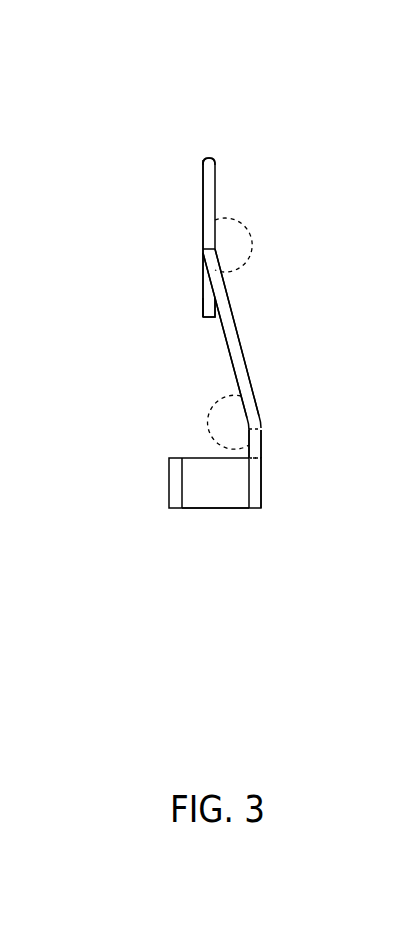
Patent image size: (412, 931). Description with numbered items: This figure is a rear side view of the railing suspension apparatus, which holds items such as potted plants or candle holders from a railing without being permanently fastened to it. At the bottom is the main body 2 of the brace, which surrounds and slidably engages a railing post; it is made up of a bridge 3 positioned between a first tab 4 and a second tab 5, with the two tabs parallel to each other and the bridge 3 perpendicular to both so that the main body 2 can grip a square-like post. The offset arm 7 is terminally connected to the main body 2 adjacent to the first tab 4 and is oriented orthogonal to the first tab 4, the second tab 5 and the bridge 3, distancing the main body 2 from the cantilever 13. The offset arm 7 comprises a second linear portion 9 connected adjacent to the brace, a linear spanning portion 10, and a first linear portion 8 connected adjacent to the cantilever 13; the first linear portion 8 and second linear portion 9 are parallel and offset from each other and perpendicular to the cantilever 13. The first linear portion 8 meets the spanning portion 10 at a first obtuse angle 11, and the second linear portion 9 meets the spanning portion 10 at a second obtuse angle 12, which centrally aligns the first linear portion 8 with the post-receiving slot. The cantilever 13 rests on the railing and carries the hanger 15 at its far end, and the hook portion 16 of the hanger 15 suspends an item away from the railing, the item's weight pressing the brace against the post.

The main body 2 is at (165, 455).
The bridge 3 is at (215, 488).
The first tab 4 is at (257, 487).
The second tab 5 is at (178, 490).
The offset arm 7 is at (270, 340).
The first linear portion 8 is at (212, 185).
The second linear portion 9 is at (258, 438).
The spanning portion 10 is at (233, 361).
The first obtuse angle 11 is at (250, 246).
The second obtuse angle 12 is at (213, 434).
The cantilever 13 is at (209, 148).
The hanger 15 is at (165, 272).
The hook portion 16 is at (208, 296).